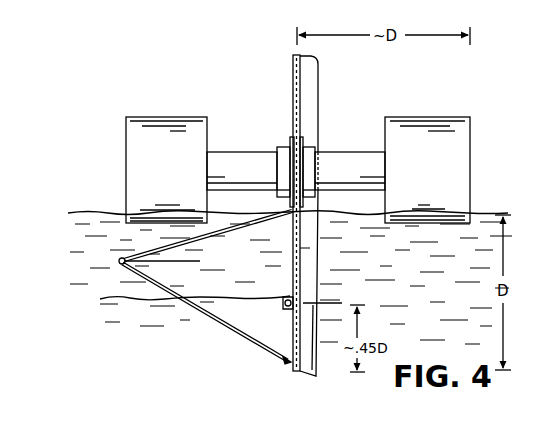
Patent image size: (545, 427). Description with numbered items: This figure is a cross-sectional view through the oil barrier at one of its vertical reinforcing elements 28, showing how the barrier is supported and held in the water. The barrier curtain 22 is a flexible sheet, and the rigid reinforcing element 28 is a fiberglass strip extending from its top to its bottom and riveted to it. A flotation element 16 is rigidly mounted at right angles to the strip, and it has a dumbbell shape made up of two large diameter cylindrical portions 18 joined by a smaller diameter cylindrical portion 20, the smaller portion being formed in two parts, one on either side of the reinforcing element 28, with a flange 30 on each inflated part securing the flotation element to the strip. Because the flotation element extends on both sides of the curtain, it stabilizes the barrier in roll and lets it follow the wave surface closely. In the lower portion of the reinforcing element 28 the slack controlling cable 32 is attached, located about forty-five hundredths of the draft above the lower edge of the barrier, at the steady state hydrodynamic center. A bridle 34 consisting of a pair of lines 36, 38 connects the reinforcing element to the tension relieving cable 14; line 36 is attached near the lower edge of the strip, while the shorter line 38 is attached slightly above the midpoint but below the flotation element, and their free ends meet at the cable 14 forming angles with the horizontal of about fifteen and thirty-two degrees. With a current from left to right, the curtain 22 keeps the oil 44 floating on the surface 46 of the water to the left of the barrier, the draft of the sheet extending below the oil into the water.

The tension relieving cable 14 is at (118, 260).
The flotation element 16 is at (126, 102).
The large diameter cylindrical portion 18 is at (155, 117).
The smaller diameter cylindrical portion 20 is at (247, 152).
The barrier curtain 22 is at (310, 78).
The reinforcing element 28 is at (293, 80).
The flange 30 is at (283, 147).
The slack controlling cable 32 is at (284, 303).
The bridle 34 is at (154, 324).
The line 36 is at (224, 320).
The line 38 is at (242, 232).
The oil 44 is at (113, 223).
The surface 46 is at (113, 299).